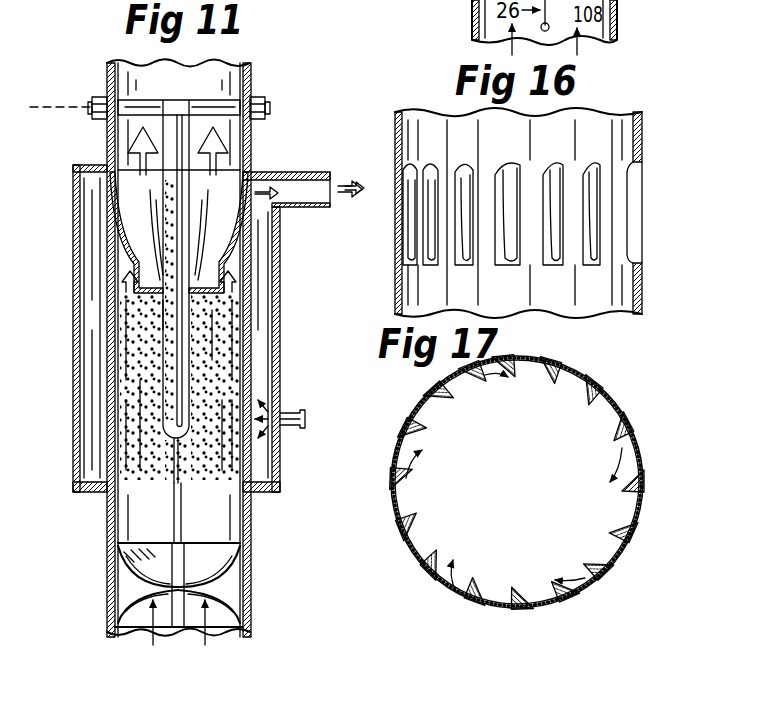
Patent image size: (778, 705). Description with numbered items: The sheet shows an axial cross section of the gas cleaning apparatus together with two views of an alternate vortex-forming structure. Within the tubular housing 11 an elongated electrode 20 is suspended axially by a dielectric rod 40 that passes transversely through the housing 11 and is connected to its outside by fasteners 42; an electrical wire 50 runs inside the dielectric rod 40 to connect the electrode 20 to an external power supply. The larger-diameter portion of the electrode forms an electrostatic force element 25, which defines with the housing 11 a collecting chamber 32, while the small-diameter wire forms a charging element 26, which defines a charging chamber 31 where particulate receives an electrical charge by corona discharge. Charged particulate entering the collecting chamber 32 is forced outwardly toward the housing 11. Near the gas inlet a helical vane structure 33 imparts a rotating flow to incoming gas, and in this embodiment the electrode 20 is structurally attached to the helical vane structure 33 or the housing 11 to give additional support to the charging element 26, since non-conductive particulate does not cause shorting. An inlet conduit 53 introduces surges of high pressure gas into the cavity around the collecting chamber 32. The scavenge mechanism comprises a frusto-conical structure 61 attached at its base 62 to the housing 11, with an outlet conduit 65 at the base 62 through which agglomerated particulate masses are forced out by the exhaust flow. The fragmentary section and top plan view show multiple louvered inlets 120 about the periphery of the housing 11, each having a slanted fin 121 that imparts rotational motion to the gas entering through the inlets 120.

In FIG. 11, the housing 11 is at (103, 597).
In FIG. 16, the housing 11 is at (392, 298).
In FIG. 11, the elongated electrode 20 is at (162, 322).
In FIG. 11, the electrostatic force element 25 is at (161, 346).
In FIG. 11, the charging element 26 is at (172, 443).
In FIG. 11, the charging chamber 31 is at (158, 539).
In FIG. 11, the collecting chamber 32 is at (230, 436).
In FIG. 11, the helical vane structure 33 is at (117, 561).
In FIG. 11, the dielectric rod 40 is at (213, 100).
In FIG. 11, the fasteners 42 is at (258, 100).
In FIG. 11, the electrical wire 50 is at (68, 105).
In FIG. 11, the inlet conduit 53 is at (291, 413).
In FIG. 11, the frusto-conical structure 61 is at (128, 244).
In FIG. 11, the base 62 is at (112, 176).
In FIG. 11, the outlet conduit 65 is at (313, 209).
In FIG. 16, the louvered inlets 120 is at (560, 182).
In FIG. 17, the louvered inlets 120 is at (424, 398).
In FIG. 16, the slanted fin 121 is at (466, 182).
In FIG. 17, the slanted fin 121 is at (466, 386).